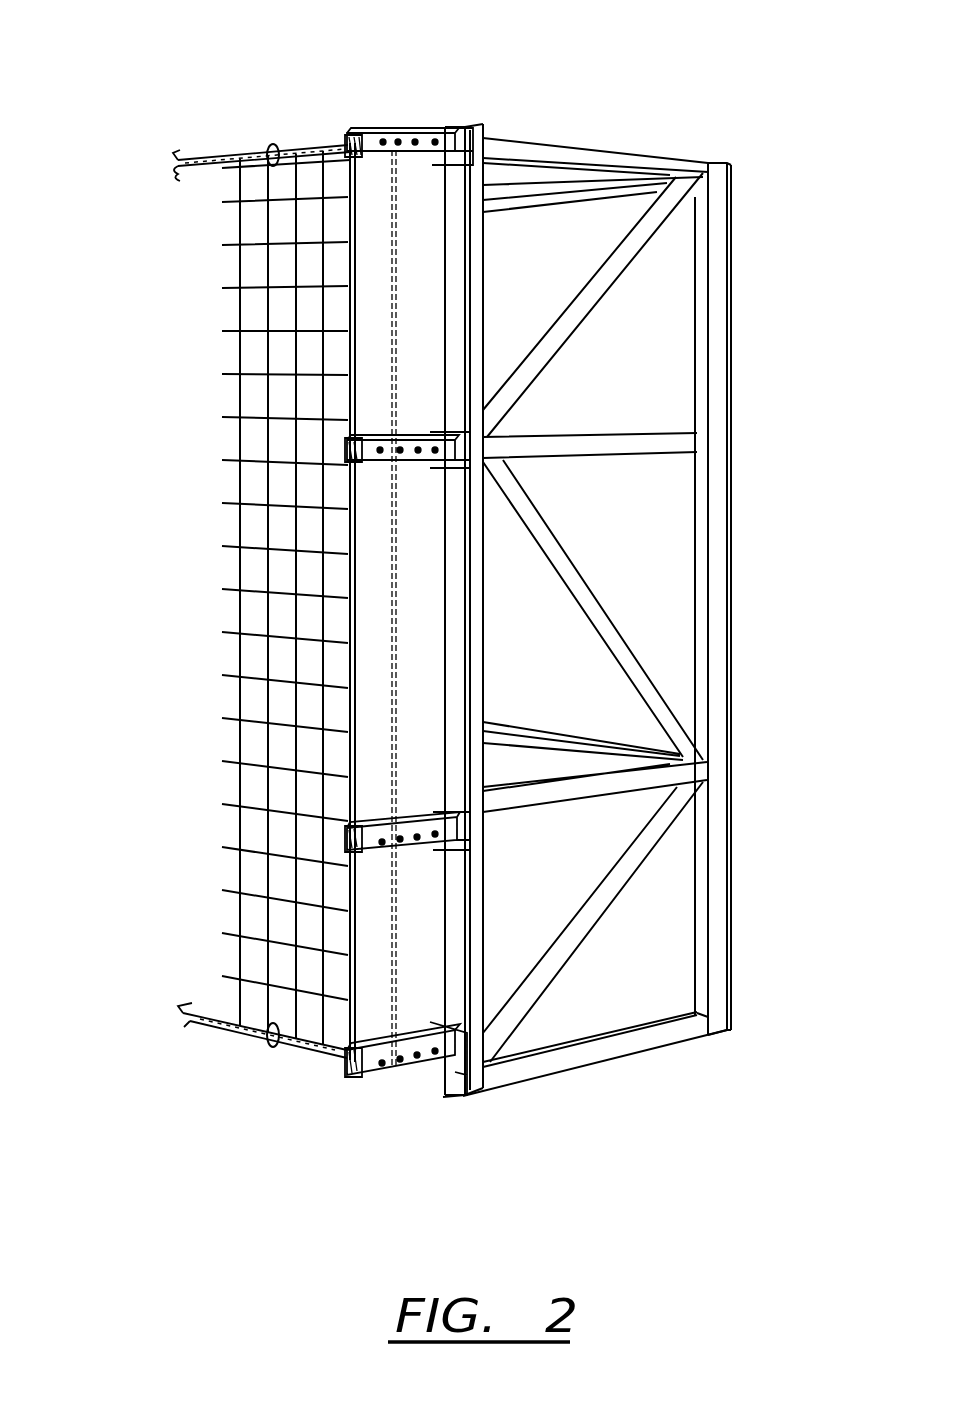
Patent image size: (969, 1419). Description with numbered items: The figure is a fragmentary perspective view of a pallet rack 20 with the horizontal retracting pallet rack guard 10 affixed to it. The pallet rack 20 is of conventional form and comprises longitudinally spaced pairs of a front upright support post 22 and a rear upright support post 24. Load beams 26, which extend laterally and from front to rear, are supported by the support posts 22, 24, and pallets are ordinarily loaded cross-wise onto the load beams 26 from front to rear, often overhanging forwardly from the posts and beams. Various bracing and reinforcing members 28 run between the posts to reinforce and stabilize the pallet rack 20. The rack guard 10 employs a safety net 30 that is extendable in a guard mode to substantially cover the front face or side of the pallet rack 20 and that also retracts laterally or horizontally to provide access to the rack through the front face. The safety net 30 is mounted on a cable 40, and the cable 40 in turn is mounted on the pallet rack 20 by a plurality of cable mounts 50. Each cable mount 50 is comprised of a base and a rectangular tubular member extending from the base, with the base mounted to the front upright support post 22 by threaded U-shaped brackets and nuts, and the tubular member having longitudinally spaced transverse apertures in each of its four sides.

The horizontal retracting pallet rack guard 10 is at (148, 507).
The pallet rack 20 is at (708, 68).
The front upright support post 22 is at (470, 262).
The rear upright support post 24 is at (726, 331).
The load beam 26 is at (622, 445).
The bracing and reinforcing member 28 is at (565, 585).
The safety net 30 is at (240, 617).
The cable 40 is at (208, 158).
The cable mount 50 is at (405, 1080).